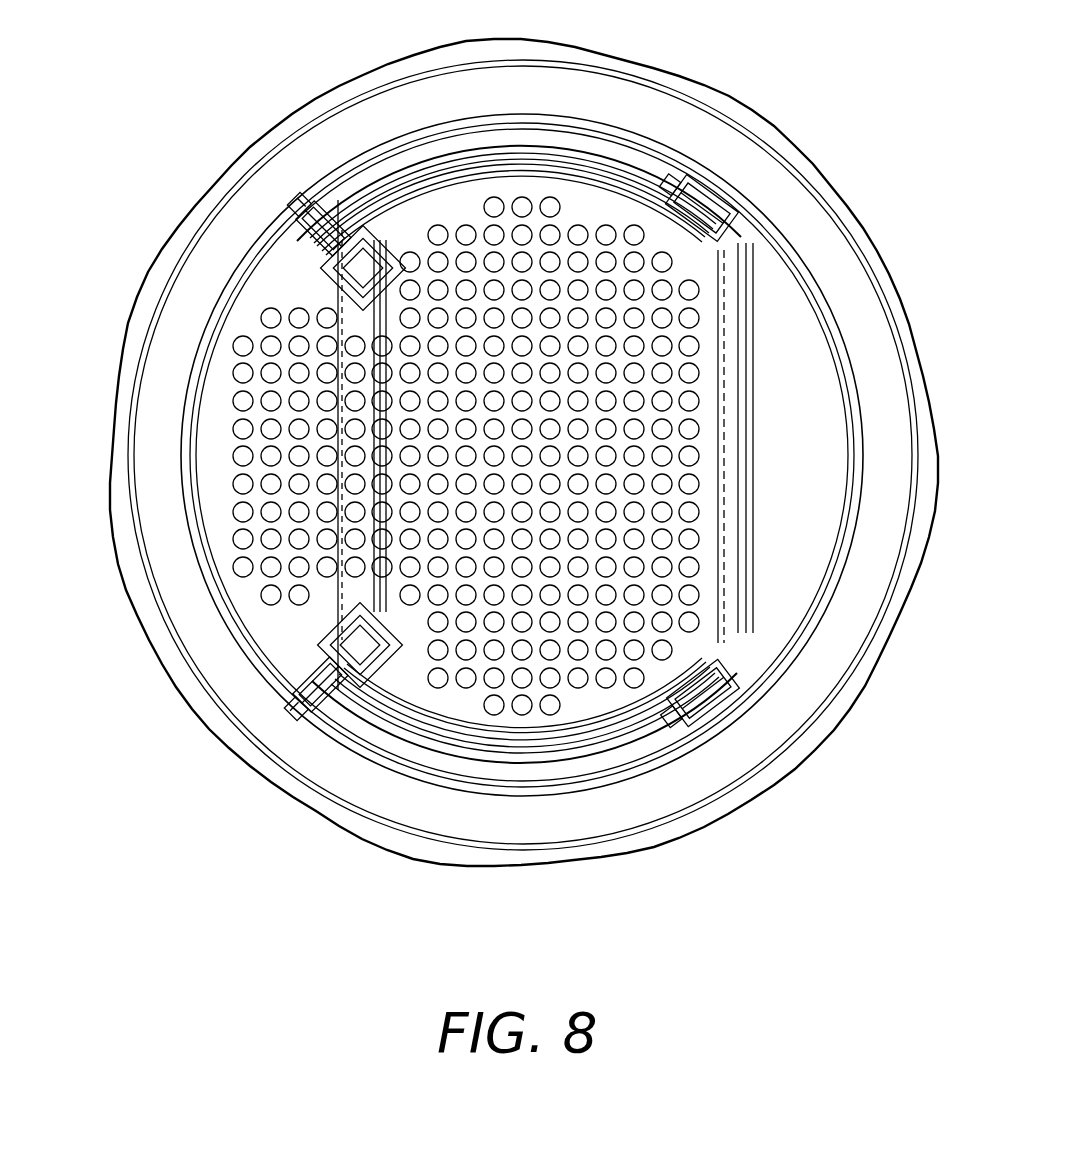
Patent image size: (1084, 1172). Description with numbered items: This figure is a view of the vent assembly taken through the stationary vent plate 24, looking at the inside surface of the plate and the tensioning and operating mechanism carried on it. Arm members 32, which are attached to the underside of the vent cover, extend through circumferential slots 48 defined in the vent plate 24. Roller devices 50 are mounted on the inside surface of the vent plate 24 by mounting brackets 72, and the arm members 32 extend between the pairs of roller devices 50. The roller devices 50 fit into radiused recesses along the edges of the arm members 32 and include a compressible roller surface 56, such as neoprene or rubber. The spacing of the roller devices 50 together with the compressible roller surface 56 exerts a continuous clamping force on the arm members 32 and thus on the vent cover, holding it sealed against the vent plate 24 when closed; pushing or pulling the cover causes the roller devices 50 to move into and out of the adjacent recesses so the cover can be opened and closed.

The vent plate 24 is at (237, 323).
The arm members 32 is at (520, 160).
The circumferential slots 48 is at (608, 160).
The roller devices 50 is at (343, 223).
The compressible roller surface 56 is at (322, 223).
The mounting brackets 72 is at (733, 250).